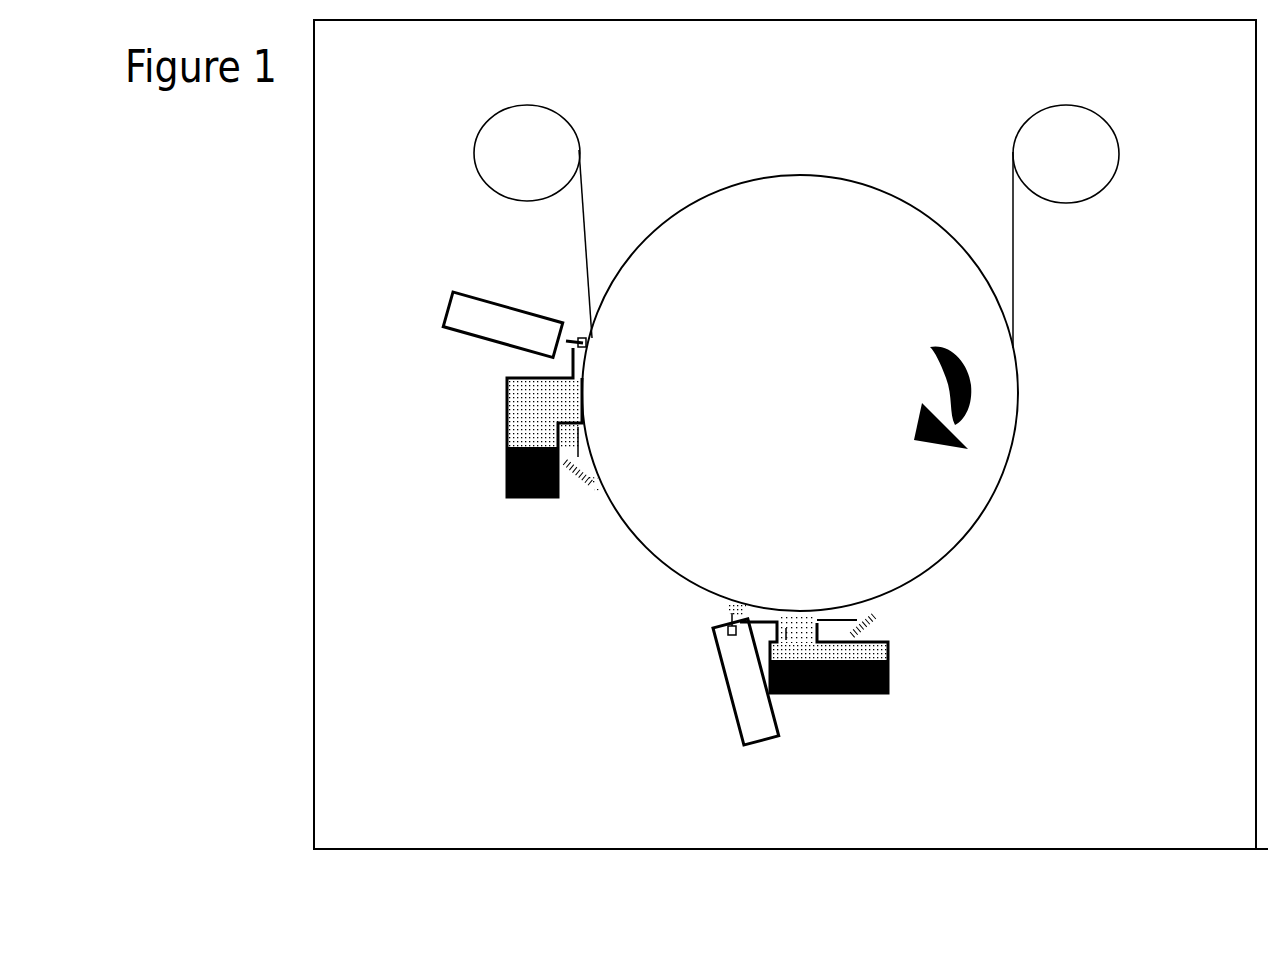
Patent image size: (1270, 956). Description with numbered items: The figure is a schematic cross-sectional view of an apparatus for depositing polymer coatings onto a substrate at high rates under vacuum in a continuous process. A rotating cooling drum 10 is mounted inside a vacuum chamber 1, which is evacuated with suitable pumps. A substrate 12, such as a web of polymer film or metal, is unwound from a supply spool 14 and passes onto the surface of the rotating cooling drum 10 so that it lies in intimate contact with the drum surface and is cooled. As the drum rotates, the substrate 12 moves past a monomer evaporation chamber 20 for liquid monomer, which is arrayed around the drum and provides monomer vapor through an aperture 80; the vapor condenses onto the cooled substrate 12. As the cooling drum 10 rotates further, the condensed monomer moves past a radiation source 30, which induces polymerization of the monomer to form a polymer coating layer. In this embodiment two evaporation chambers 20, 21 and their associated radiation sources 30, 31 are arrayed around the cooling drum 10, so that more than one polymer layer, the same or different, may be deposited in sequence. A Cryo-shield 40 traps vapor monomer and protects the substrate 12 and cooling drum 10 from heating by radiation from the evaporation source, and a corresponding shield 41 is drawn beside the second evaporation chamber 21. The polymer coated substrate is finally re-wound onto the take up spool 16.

The vacuum chamber 1 is at (314, 508).
The rotating cooling drum 10 is at (1003, 470).
The substrate 12 is at (1023, 263).
The supply spool 14 is at (1095, 155).
The take up spool 16 is at (495, 153).
The monomer evaporation chamber 20 is at (893, 677).
The evaporation chamber 21 is at (507, 482).
The radiation source 30 is at (700, 688).
The radiation source 31 is at (518, 298).
The Cryo-shield 40 is at (877, 616).
The second air flow direction 41 is at (579, 483).
The aperture 80 is at (786, 628).